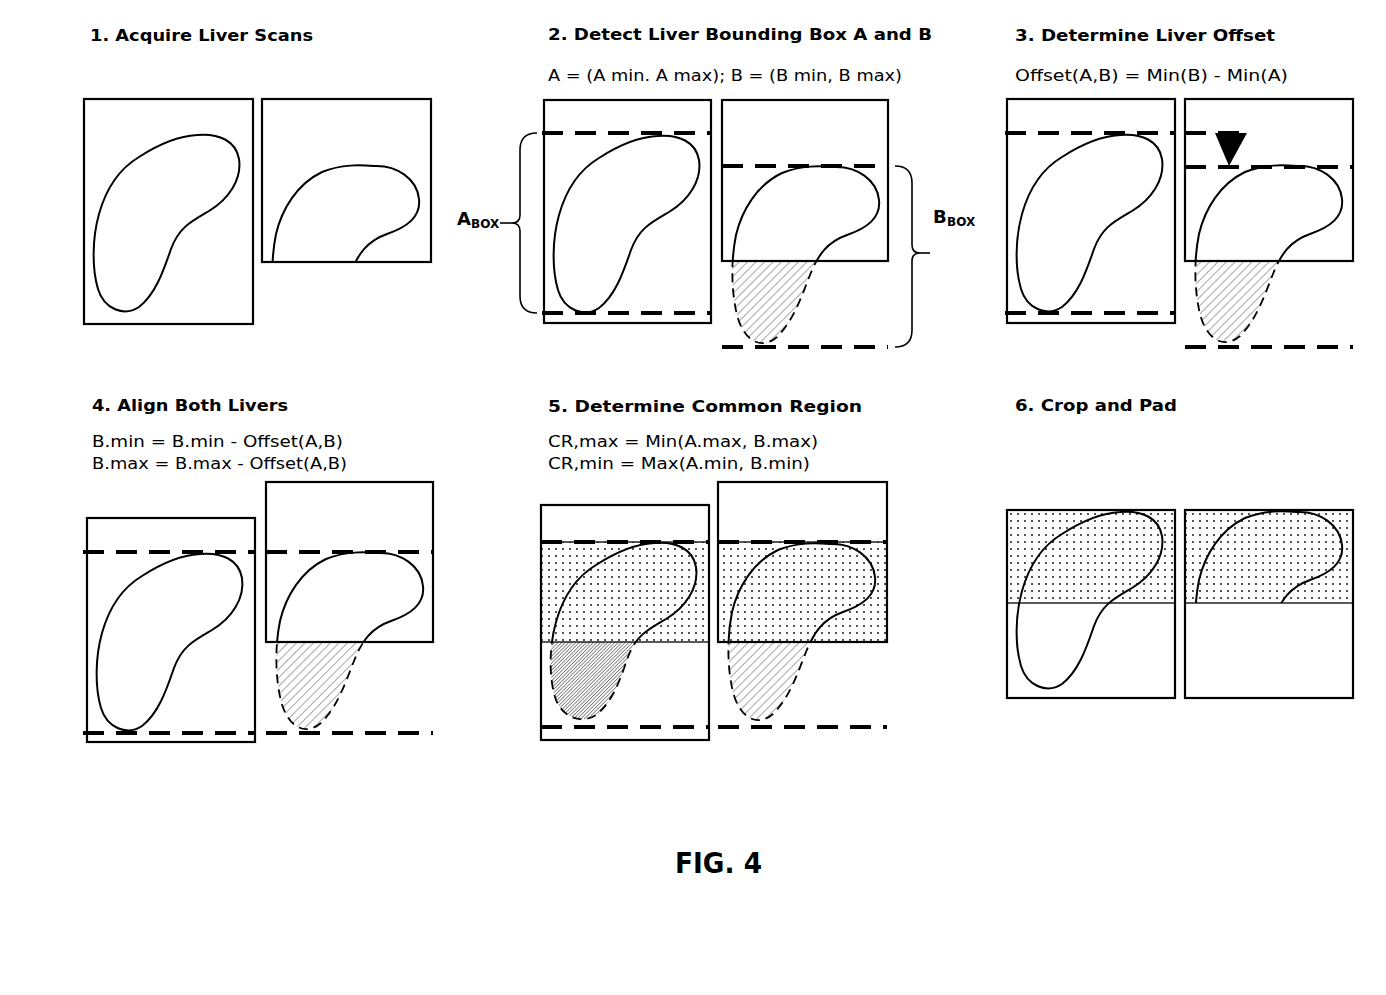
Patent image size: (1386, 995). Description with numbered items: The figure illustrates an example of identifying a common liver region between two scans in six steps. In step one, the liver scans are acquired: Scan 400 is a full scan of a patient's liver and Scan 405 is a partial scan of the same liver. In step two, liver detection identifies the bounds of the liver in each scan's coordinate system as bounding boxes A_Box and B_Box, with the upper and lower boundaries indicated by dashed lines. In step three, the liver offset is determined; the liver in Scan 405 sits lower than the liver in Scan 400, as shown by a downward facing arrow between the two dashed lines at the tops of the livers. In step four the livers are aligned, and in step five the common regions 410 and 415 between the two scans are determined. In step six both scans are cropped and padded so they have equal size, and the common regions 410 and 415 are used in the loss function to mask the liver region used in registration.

The Scan 400 is at (253, 291).
The Scan 405 is at (395, 262).
The common region 410 is at (553, 586).
The common region 415 is at (868, 625).